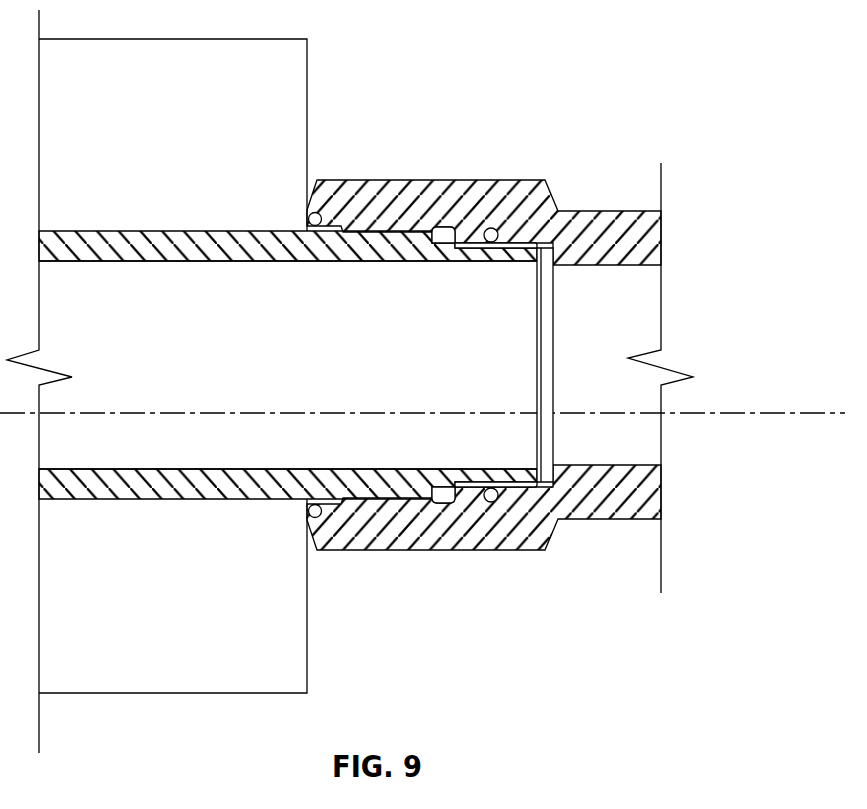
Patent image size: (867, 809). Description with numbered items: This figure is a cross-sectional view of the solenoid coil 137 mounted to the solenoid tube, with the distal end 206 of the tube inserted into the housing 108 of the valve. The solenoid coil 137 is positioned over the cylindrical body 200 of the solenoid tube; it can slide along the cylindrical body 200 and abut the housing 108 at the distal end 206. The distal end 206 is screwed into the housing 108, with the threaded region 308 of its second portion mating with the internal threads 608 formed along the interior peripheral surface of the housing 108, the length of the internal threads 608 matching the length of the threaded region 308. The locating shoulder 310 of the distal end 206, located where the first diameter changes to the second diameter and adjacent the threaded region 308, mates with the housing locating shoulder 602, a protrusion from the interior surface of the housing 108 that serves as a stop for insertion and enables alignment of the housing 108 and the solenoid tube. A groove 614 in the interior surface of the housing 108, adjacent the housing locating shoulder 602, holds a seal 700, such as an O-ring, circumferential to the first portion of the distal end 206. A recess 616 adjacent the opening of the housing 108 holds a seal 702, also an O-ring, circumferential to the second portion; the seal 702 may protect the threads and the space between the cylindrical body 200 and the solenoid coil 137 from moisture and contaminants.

The solenoid coil 137 is at (97, 42).
The housing 108 is at (367, 556).
The cylindrical body 200 is at (288, 333).
The distal end 206 is at (246, 262).
The threaded region 308 is at (335, 365).
The internal threads 608 is at (386, 486).
The locating shoulder 310 is at (621, 363).
The housing locating shoulder 602 is at (452, 240).
The recess 616 is at (394, 327).
The seal 702 is at (313, 206).
The groove 614 is at (567, 413).
The seal 700 is at (492, 506).